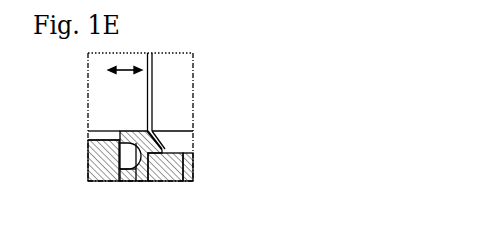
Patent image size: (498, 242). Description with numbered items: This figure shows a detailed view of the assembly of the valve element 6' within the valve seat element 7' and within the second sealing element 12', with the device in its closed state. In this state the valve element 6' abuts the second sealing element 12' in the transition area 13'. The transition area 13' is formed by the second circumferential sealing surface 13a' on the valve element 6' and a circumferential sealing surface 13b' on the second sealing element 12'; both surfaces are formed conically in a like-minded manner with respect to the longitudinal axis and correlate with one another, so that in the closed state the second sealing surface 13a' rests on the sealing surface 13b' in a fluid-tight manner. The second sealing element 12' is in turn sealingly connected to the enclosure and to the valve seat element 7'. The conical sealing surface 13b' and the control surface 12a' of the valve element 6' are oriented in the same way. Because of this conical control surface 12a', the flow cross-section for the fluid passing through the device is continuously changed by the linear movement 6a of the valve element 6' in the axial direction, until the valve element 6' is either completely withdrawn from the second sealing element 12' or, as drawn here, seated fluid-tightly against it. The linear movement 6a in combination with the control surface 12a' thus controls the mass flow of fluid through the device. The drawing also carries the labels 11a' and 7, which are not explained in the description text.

The linear movement 6a is at (118, 64).
The control surface 12a' is at (81, 117).
The second circumferential sealing surface 13a' is at (184, 89).
The valve element 6' is at (215, 117).
The second chamber 11a' is at (163, 92).
The transition area 13' is at (186, 151).
The valve seat element 7' is at (151, 182).
The second sealing element 12' is at (165, 185).
The circumferential sealing surface 13b' is at (141, 169).
The housing part 7 is at (103, 171).